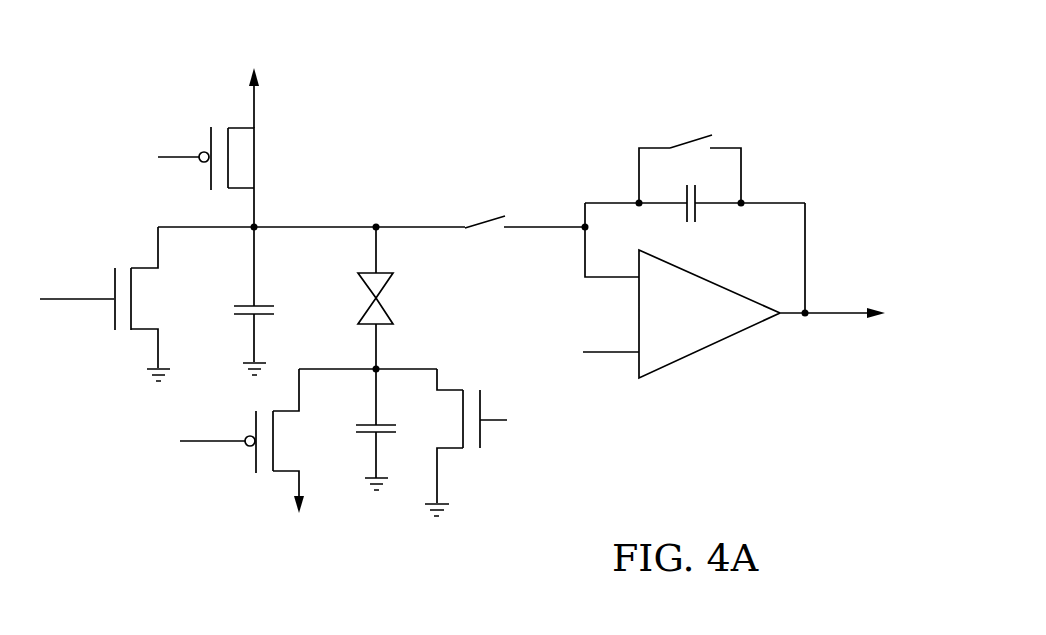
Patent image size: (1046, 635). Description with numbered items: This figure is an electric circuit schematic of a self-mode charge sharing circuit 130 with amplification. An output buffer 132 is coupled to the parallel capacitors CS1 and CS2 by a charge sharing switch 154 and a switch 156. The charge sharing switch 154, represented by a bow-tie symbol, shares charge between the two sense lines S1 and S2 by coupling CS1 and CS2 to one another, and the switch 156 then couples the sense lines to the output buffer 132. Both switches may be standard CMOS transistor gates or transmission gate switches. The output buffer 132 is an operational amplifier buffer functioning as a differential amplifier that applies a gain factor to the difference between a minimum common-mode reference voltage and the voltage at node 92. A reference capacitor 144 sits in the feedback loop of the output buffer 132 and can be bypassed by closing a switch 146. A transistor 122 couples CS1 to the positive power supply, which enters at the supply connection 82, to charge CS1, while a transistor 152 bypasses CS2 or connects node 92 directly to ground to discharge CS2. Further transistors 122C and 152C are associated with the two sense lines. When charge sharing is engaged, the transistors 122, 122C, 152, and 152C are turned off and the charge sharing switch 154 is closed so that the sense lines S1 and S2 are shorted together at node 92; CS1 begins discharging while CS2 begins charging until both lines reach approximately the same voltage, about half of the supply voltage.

The self-mode charge sharing circuit 130 is at (752, 53).
The supply voltage node VDD 82 is at (256, 108).
The transistor 122 is at (210, 143).
The transistor 122C is at (112, 282).
The sense line S1 is at (257, 262).
The node 92 is at (376, 222).
The charge sharing switch 154 is at (382, 305).
The sense line S2 is at (380, 343).
The transistor 152C is at (250, 453).
The transistor 152 is at (453, 452).
The switch 156 is at (492, 216).
The reference capacitor 144 is at (698, 215).
The switch 146 is at (688, 140).
The output buffer 132 is at (728, 338).